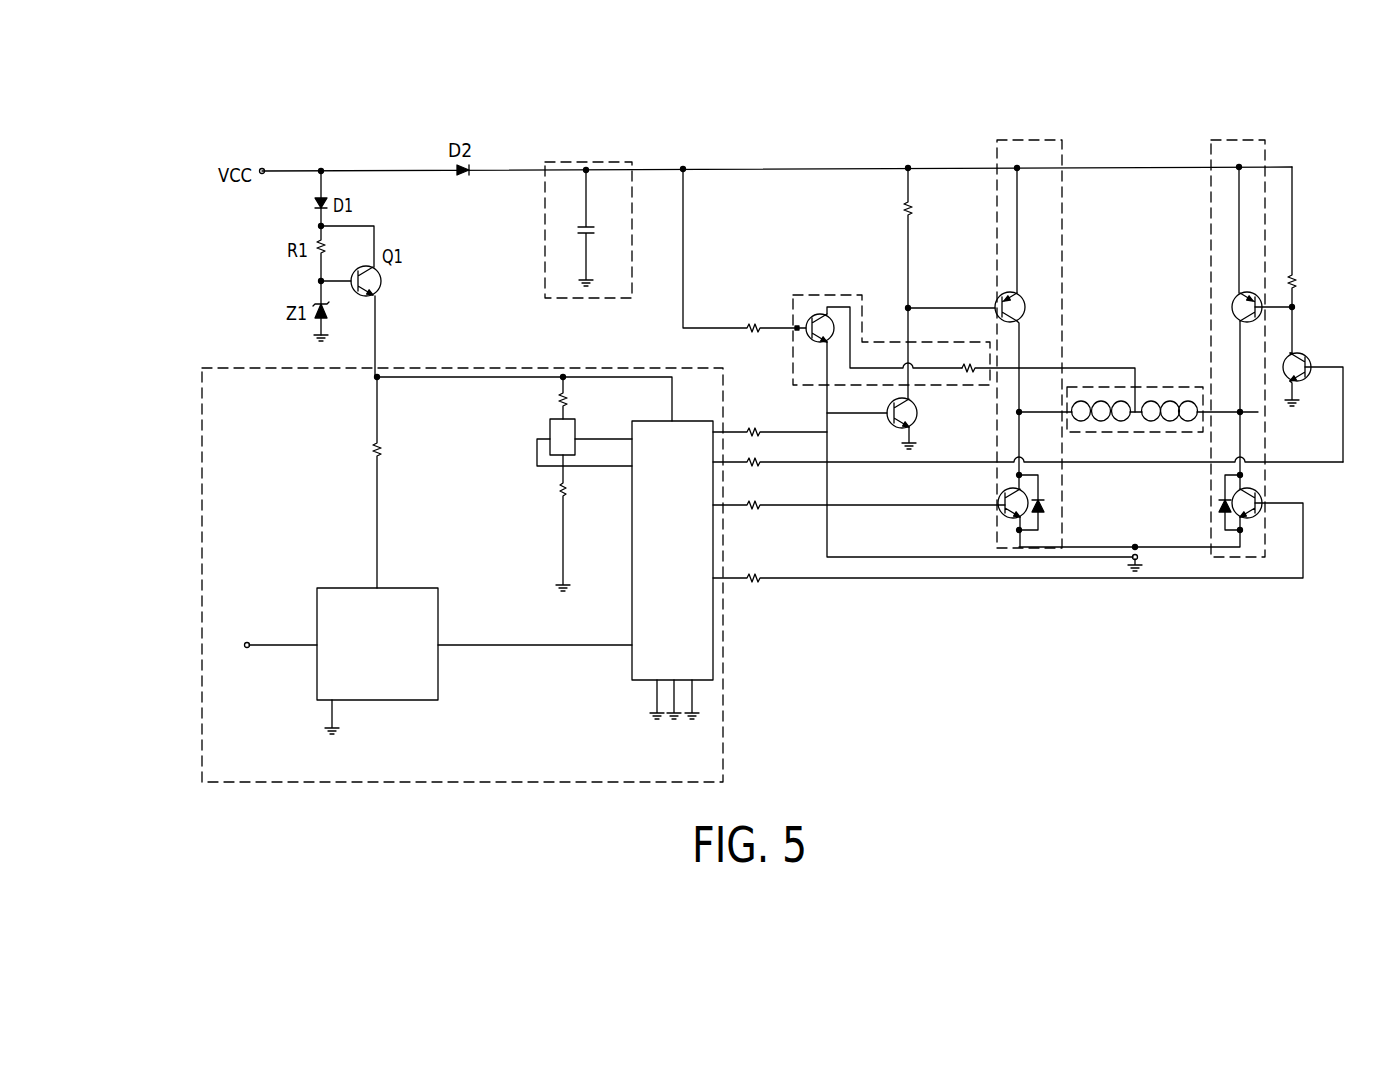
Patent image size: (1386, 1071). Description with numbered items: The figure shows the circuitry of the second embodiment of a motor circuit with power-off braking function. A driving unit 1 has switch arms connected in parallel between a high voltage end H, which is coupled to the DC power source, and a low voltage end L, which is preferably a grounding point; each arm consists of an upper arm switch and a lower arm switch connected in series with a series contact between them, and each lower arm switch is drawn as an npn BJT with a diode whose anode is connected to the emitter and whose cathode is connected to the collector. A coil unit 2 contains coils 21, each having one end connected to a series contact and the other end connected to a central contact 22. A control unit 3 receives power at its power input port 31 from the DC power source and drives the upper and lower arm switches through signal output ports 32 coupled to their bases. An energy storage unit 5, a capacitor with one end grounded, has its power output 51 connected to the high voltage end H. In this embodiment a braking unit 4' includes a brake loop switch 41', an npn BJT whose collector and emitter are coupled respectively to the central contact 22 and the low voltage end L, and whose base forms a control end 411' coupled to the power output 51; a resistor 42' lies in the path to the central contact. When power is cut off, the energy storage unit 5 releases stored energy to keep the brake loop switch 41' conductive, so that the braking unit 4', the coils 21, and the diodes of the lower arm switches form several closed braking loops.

The driving unit 1 is at (1157, 409).
The coil unit 2 is at (1135, 351).
The coil 21 is at (1178, 405).
The central contact 22 is at (1134, 405).
The control unit 3 is at (772, 561).
The power input port 31 is at (379, 377).
The signal output port 32 is at (715, 435).
The braking unit 4' is at (931, 283).
The brake loop switch 41' is at (848, 224).
The control end 411' is at (845, 295).
The resistor 42' is at (1046, 412).
The energy storage unit 5 is at (613, 195).
The power output 51 is at (586, 165).
The high voltage end H is at (1018, 168).
The low voltage end L is at (1135, 547).